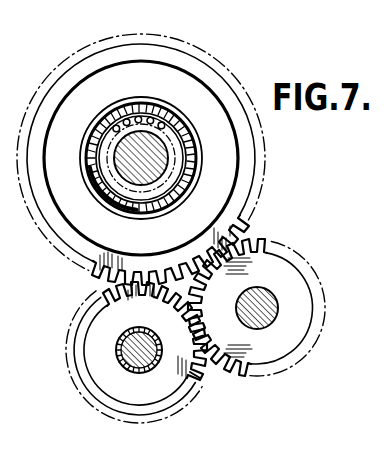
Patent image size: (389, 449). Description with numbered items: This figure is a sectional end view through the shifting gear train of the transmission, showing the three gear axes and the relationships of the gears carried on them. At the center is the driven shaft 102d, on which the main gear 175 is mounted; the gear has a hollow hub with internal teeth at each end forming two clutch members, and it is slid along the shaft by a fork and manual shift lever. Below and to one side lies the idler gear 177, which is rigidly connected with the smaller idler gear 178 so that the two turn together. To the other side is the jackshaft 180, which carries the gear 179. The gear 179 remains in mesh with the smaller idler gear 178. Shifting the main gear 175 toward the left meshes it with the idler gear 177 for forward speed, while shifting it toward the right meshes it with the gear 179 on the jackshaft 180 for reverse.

The driven shaft 102d is at (157, 157).
The main gear 175 is at (250, 219).
The idler gear 177 is at (97, 293).
The smaller idler gear 178 is at (211, 368).
The gear 179 is at (272, 242).
The jackshaft 180 is at (278, 308).